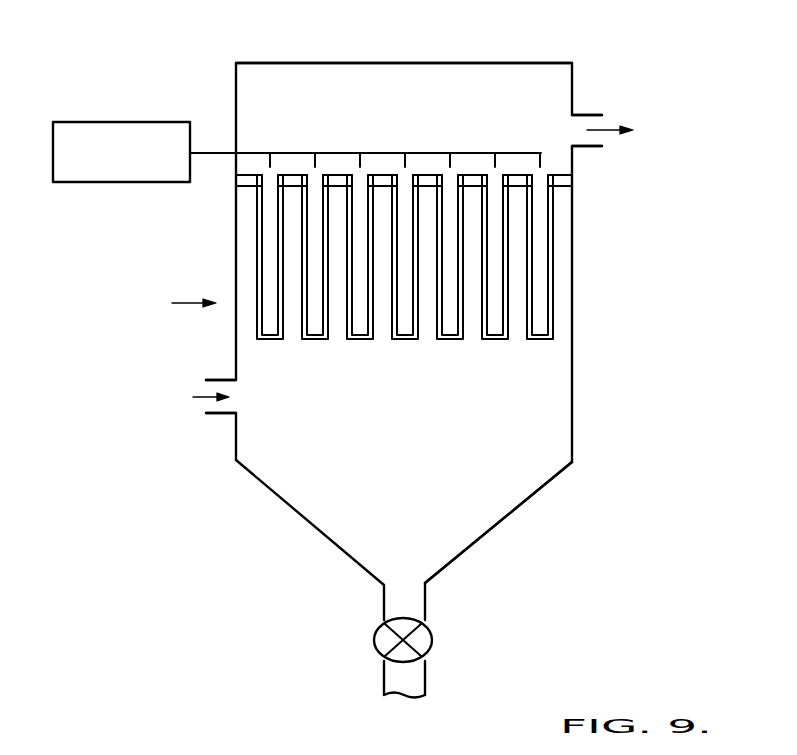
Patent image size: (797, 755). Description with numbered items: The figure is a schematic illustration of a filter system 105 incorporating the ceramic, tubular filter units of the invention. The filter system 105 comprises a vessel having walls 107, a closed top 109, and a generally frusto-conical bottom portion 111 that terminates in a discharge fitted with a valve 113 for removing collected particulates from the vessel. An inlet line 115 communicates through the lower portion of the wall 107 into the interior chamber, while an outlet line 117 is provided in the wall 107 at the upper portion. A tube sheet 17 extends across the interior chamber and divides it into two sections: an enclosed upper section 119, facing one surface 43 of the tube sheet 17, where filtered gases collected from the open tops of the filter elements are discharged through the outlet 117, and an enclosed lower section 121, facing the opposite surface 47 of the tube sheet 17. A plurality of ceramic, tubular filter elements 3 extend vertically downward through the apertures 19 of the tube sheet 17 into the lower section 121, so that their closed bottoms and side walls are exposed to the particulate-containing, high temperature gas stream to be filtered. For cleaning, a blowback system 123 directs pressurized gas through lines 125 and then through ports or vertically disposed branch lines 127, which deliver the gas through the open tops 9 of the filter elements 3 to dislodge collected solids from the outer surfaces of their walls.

The ceramic tubular filter element 3 is at (273, 320).
The open top 9 is at (466, 140).
The tube sheet 17 is at (253, 190).
The aperture 19 is at (331, 200).
The one surface of the tube sheet 43 is at (243, 168).
The opposite surface of the tube sheet 47 is at (428, 194).
The filter system 105 is at (349, 340).
The wall 107 is at (573, 350).
The closed top 109 is at (366, 62).
The frusto-conical bottom portion 111 is at (310, 525).
The valve 113 is at (433, 641).
The inlet line 115 is at (210, 413).
The outlet line 117 is at (598, 113).
The upper section 119 is at (465, 78).
The lower section 121 is at (518, 459).
The blowback system 123 is at (141, 122).
The line 125 is at (292, 152).
The branch line 127 is at (358, 160).